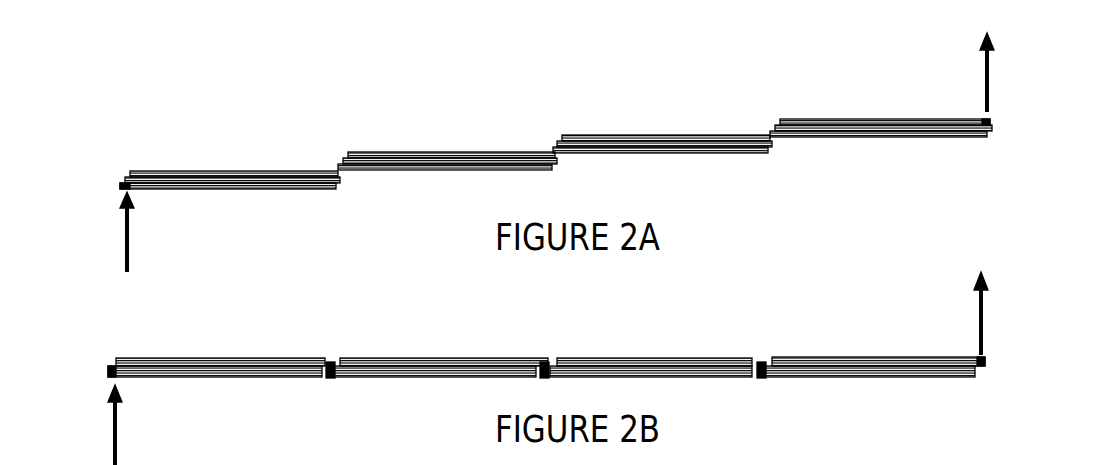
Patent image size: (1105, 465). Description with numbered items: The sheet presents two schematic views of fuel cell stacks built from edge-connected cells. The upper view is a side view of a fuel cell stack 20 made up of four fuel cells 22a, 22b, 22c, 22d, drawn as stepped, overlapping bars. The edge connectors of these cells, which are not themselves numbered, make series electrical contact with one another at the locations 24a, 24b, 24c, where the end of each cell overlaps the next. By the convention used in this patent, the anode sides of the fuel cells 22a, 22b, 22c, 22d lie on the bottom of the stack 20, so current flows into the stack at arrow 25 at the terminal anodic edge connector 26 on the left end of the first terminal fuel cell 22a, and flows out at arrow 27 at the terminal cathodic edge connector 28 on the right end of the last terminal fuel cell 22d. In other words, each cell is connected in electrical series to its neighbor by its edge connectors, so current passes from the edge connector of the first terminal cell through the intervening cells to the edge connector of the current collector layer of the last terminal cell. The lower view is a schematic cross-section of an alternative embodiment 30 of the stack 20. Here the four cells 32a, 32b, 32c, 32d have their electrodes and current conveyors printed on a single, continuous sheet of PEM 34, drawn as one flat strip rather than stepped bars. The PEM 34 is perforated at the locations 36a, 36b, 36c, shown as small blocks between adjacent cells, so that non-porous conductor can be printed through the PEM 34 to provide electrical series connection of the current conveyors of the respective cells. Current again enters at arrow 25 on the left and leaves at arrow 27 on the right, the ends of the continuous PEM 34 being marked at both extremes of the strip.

In FIG. 2A, the fuel cell stack 20 is at (247, 110).
In FIG. 2A, the fuel cell 22a is at (240, 172).
In FIG. 2A, the fuel cell 22b is at (463, 150).
In FIG. 2A, the fuel cell 22c is at (680, 137).
In FIG. 2A, the fuel cell 22d is at (890, 120).
In FIG. 2A, the location of series electrical contact 24a is at (348, 184).
In FIG. 2A, the location of series electrical contact 24b is at (560, 153).
In FIG. 2A, the location of series electrical contact 24c is at (778, 143).
In FIG. 2A, the arrow 25 is at (130, 238).
In FIG. 2B, the arrow 25 is at (118, 412).
In FIG. 2A, the terminal anodic edge connector 26 is at (120, 178).
In FIG. 2A, the arrow 27 is at (988, 88).
In FIG. 2B, the arrow 27 is at (983, 305).
In FIG. 2A, the terminal cathodic edge connector 28 is at (993, 125).
In FIG. 2B, the alternative embodiment 30 is at (876, 290).
In FIG. 2B, the cell 32a is at (230, 360).
In FIG. 2B, the cell 32b is at (440, 358).
In FIG. 2B, the cell 32c is at (672, 358).
In FIG. 2B, the cell 32d is at (897, 358).
In FIG. 2B, the PEM 34 is at (118, 359).
In FIG. 2B, the perforation location 36a is at (340, 385).
In FIG. 2B, the perforation location 36b is at (535, 371).
In FIG. 2B, the perforation location 36c is at (768, 375).